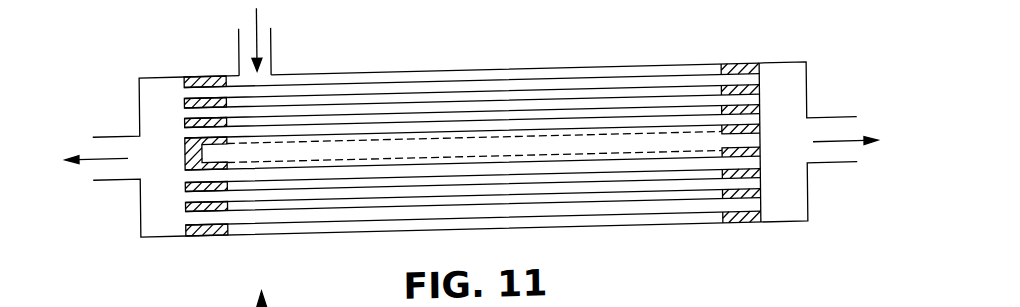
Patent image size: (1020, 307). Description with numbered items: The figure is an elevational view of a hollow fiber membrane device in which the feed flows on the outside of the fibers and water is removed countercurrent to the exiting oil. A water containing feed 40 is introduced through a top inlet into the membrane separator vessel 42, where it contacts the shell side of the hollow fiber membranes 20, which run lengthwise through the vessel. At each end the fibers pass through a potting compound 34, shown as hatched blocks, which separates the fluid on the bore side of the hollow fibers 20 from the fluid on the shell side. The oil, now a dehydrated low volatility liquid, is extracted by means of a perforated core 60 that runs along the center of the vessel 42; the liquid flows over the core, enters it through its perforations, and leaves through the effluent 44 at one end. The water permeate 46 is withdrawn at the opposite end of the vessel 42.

The hollow fiber membrane 20 is at (529, 88).
The potting compound 34 is at (207, 236).
The feed 40 is at (258, 24).
The membrane separator vessel 42 is at (587, 237).
The effluent 44 is at (840, 156).
The permeate 46 is at (100, 150).
The perforated core 60 is at (383, 145).